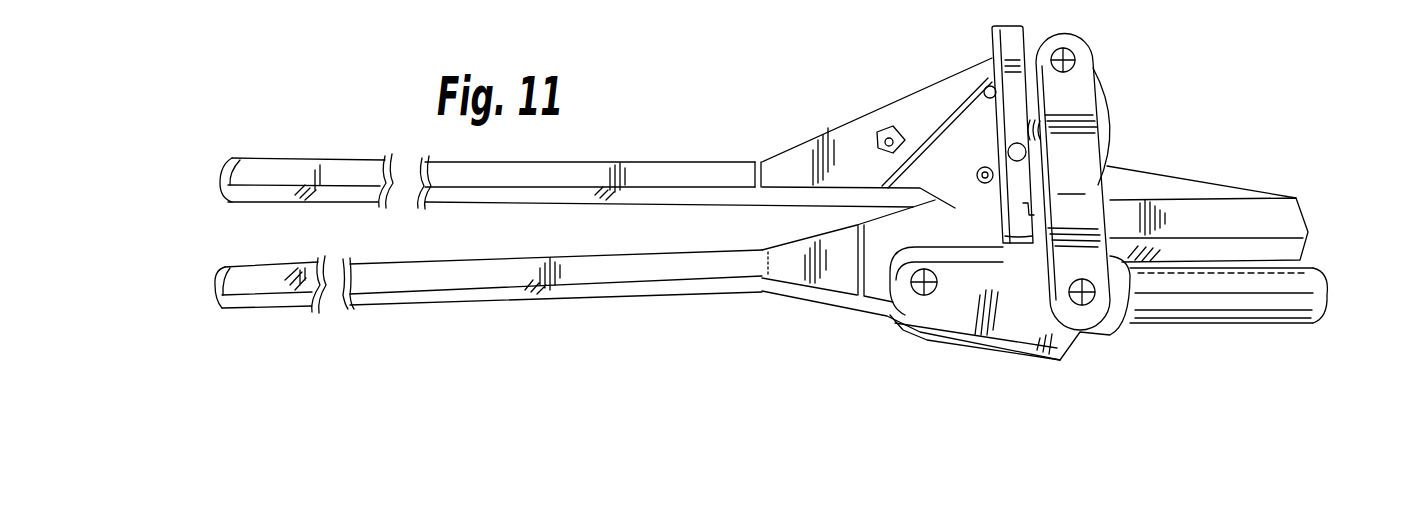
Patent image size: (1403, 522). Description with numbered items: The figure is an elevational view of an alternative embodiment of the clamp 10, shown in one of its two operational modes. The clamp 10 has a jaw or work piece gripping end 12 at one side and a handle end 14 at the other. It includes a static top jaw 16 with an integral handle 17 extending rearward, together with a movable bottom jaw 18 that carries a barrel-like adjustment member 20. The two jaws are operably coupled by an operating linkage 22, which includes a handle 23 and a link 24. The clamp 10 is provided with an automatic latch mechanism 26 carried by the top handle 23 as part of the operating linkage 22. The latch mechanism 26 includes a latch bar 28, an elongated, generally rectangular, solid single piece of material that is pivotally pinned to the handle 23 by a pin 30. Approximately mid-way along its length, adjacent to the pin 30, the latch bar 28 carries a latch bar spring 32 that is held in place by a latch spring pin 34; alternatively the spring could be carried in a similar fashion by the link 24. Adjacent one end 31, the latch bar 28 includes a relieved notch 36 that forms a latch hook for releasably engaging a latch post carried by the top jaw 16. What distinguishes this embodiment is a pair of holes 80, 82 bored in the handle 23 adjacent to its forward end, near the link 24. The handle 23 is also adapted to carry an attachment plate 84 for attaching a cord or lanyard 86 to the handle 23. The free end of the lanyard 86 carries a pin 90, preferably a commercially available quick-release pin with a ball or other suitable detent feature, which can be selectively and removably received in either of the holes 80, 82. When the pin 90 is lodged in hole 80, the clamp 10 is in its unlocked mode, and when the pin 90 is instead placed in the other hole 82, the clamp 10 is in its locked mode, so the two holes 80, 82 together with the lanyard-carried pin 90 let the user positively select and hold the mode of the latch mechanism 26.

The clamp 10 is at (760, 358).
The jaw or work piece gripping end 12 is at (1311, 345).
The handle end 14 is at (563, 325).
The static top jaw 16 is at (1187, 203).
The integral handle 17 is at (613, 294).
The movable bottom jaw 18 is at (1113, 335).
The barrel-like adjustment member 20 is at (1327, 300).
The operating linkage 22 is at (1113, 69).
The handle 23 is at (600, 161).
The link 24 is at (1074, 208).
The automatic latch mechanism 26 is at (982, 54).
The latch bar 28 is at (985, 78).
The pin 30 is at (1026, 156).
The end 31 is at (1033, 247).
The latch bar spring 32 is at (1030, 120).
The latch spring pin 34 is at (1036, 133).
The relieved notch 36 is at (1037, 247).
The hole 80 is at (984, 92).
The hole 82 is at (980, 172).
The attachment plate 84 is at (877, 128).
The cord or lanyard 86 is at (882, 128).
The pin 90 is at (958, 190).